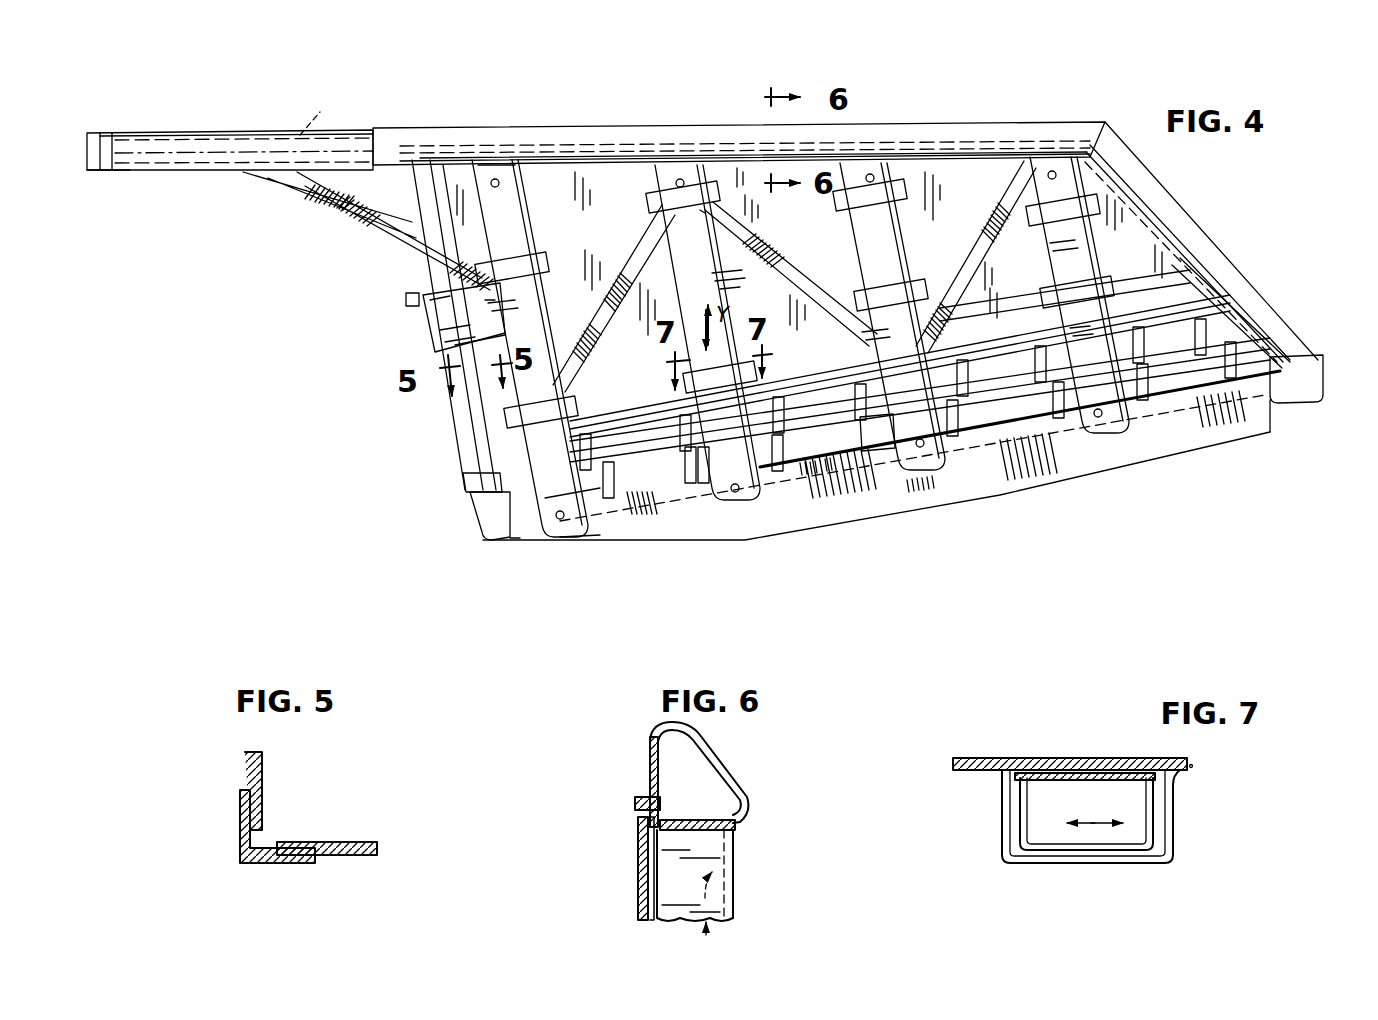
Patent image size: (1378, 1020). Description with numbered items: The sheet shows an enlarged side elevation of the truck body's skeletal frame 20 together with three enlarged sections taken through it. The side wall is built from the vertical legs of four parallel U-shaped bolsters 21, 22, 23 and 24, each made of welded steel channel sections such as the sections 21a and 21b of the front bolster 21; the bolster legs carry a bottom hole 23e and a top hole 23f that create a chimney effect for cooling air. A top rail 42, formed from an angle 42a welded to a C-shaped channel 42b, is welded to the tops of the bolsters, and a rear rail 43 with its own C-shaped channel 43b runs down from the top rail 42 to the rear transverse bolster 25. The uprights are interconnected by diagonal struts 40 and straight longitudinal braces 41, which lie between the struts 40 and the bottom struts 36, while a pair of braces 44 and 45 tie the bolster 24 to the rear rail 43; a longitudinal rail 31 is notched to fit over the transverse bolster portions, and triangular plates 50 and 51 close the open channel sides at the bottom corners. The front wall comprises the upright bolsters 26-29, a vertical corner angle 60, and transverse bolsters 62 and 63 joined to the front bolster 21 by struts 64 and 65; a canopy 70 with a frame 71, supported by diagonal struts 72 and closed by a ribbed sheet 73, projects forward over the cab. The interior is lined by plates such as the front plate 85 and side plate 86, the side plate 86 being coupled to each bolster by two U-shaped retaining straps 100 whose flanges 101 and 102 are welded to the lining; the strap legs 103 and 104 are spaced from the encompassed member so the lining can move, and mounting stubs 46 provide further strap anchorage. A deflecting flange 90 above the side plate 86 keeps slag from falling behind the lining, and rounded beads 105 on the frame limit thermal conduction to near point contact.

In FIG. 4, the skeletal frame 20 is at (448, 414).
In FIG. 4, the front U-shaped bolster 21 is at (565, 540).
In FIG. 4, the channel section 21a is at (505, 170).
In FIG. 4, the channel section 21b is at (578, 540).
In FIG. 4, the U-shaped bolster 22 is at (740, 503).
In FIG. 6, the U-shaped bolster 22 is at (740, 900).
In FIG. 7, the U-shaped bolster 22 is at (1150, 828).
In FIG. 4, the U-shaped bolster 23 is at (925, 472).
In FIG. 4, the bottom hole 23e is at (885, 452).
In FIG. 4, the top hole 23f is at (878, 178).
In FIG. 4, the U-shaped bolster 24 is at (1103, 436).
In FIG. 4, the transverse bolster 25 is at (1283, 403).
In FIG. 4, the upright bolsters 26-29 is at (420, 284).
In FIG. 4, the longitudinal rail 31 is at (905, 442).
In FIG. 4, the bottom struts 36 is at (660, 470).
In FIG. 4, the diagonal struts 40 is at (625, 260).
In FIG. 4, the longitudinal braces 41 is at (820, 385).
In FIG. 4, the top rail 42 is at (620, 127).
In FIG. 6, the top rail 42 is at (742, 760).
In FIG. 6, the angle 42a is at (665, 762).
In FIG. 4, the C-shaped channel 42b is at (672, 137).
In FIG. 6, the C-shaped channel 42b is at (745, 808).
In FIG. 4, the rear rail 43 is at (1185, 210).
In FIG. 4, the C-shaped channel 43b is at (1232, 285).
In FIG. 4, the brace 44 is at (1160, 300).
In FIG. 4, the brace 45 is at (1178, 272).
In FIG. 4, the mounting stubs 46 is at (778, 472).
In FIG. 4, the triangular plate 50 is at (520, 452).
In FIG. 4, the triangular plate 51 is at (580, 498).
In FIG. 4, the vertical angle 60 is at (443, 175).
In FIG. 5, the vertical angle 60 is at (240, 815).
In FIG. 4, the transverse bolster 62 is at (472, 525).
In FIG. 4, the transverse bolster 63 is at (440, 328).
In FIG. 4, the struts 64 is at (527, 540).
In FIG. 4, the struts 65 is at (445, 340).
In FIG. 4, the canopy 70 is at (195, 132).
In FIG. 4, the canopy frame 71 is at (130, 170).
In FIG. 4, the diagonal struts 72 is at (348, 190).
In FIG. 4, the ribbed steel sheet 73 is at (300, 132).
In FIG. 5, the front plate 85 is at (262, 775).
In FIG. 4, the side plate 86 is at (812, 252).
In FIG. 5, the side plate 86 is at (345, 842).
In FIG. 6, the side plate 86 is at (638, 870).
In FIG. 7, the side plate 86 is at (975, 758).
In FIG. 6, the deflecting flange 90 is at (642, 795).
In FIG. 4, the U-shaped retaining strap 100 is at (650, 205).
In FIG. 7, the U-shaped retaining strap 100 is at (1095, 866).
In FIG. 7, the flange 101 is at (995, 778).
In FIG. 7, the flange 102 is at (1178, 778).
In FIG. 7, the strap leg 103 is at (1002, 835).
In FIG. 7, the strap leg 104 is at (1175, 815).
In FIG. 6, the beads 105 is at (651, 850).
In FIG. 7, the beads 105 is at (1120, 772).